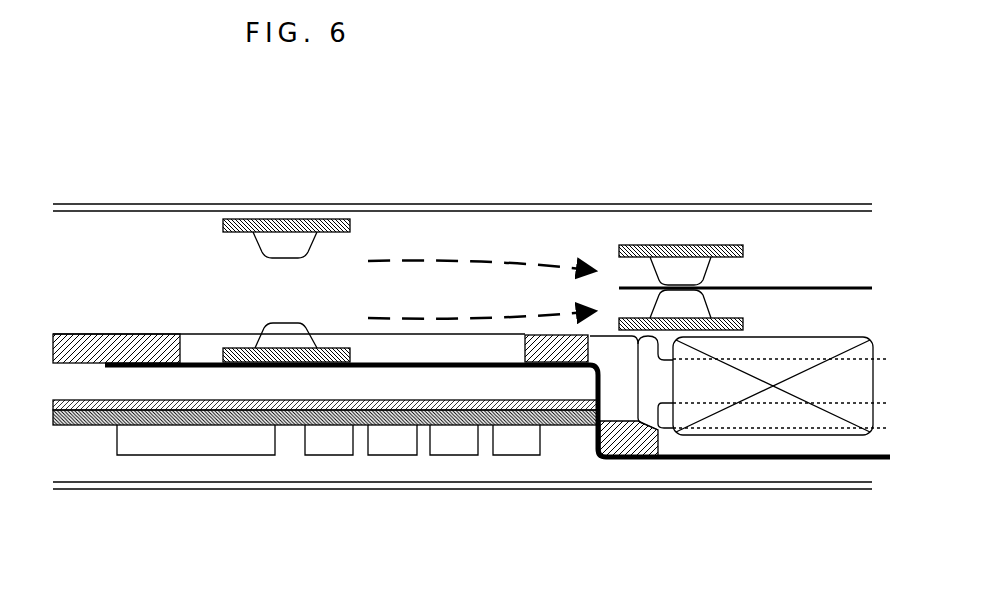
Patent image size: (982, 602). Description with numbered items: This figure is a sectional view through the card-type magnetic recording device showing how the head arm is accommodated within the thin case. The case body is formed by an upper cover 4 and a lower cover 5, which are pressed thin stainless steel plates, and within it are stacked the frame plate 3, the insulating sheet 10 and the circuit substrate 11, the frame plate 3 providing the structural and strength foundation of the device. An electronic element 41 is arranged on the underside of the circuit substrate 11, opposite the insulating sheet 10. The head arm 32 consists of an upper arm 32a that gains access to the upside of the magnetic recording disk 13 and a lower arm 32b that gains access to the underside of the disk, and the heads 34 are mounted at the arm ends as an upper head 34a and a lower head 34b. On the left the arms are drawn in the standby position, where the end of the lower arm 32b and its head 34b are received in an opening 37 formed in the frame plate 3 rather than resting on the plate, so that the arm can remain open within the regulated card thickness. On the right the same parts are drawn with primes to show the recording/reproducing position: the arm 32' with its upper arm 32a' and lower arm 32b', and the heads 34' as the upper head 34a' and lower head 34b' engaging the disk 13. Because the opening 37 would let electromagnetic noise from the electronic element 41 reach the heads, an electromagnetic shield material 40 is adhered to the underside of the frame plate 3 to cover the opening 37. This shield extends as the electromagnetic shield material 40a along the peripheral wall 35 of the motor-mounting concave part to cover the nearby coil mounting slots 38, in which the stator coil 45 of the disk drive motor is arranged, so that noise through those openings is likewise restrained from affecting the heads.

The frame plate 3 is at (150, 347).
The upper cover 4 is at (372, 203).
The lower cover 5 is at (305, 490).
The insulating sheet 10 is at (73, 400).
The circuit substrate 11 is at (77, 413).
The magnetic recording disk 13 is at (830, 288).
The head arm 32 is at (224, 250).
The upper arm 32a is at (286, 185).
The lower arm 32b is at (277, 319).
The head arm in recording/reproducing position 32' is at (654, 239).
The upper arm in recording/reproducing position 32a' is at (680, 205).
The lower arm in recording/reproducing position 32b' is at (723, 286).
The head 34 is at (230, 243).
The upper head 34a is at (291, 198).
The lower head 34b is at (286, 312).
The head in recording/reproducing position 34' is at (657, 228).
The upper head in recording/reproducing position 34a' is at (687, 219).
The lower head in recording/reproducing position 34b' is at (722, 235).
The peripheral wall 35 is at (622, 390).
The opening 37 is at (400, 360).
The coil mounting slot 38 is at (772, 440).
The electromagnetic shield material 40 is at (383, 403).
The electromagnetic shield material 40a is at (583, 455).
The electronic element 41 is at (188, 447).
The stator coil 45 is at (822, 328).